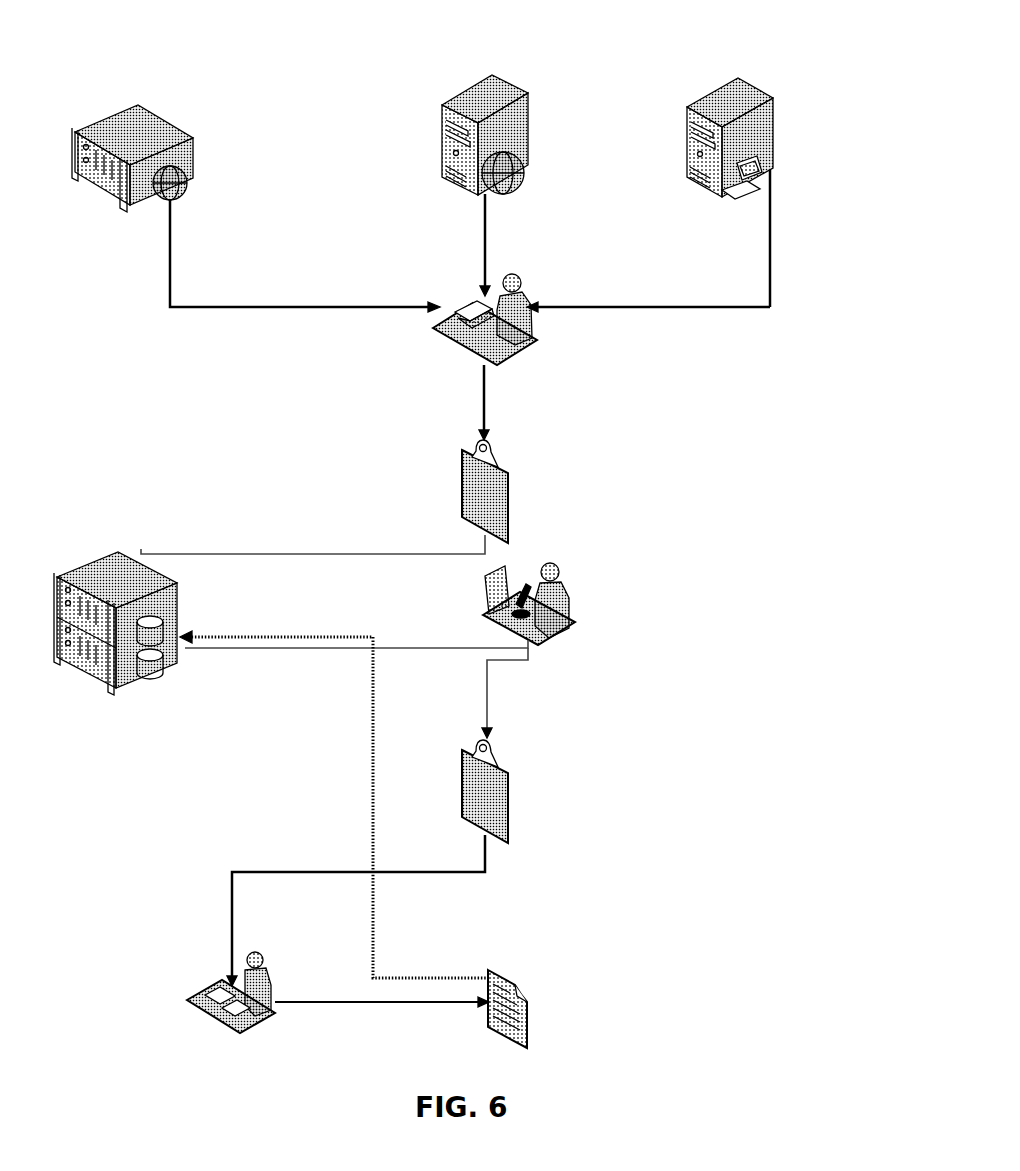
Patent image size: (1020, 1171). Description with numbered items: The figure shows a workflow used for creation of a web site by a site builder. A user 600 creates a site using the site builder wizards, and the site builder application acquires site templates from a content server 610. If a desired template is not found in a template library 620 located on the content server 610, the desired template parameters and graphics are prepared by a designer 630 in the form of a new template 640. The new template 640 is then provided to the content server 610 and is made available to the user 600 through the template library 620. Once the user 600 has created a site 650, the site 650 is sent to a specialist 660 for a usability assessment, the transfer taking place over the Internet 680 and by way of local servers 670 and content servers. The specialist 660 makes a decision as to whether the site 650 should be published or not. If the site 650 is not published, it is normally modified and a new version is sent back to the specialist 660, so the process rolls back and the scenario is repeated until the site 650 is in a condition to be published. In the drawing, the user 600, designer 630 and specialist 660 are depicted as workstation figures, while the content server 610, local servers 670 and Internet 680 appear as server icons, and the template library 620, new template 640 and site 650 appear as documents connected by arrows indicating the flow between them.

The user 600 is at (567, 588).
The content server 610 is at (120, 552).
The template library 620 is at (193, 147).
The designer 630 is at (207, 982).
The new template 640 is at (527, 1003).
The site 650 is at (508, 488).
The specialist 660 is at (527, 298).
The local servers 670 is at (740, 77).
The Internet 680 is at (528, 112).